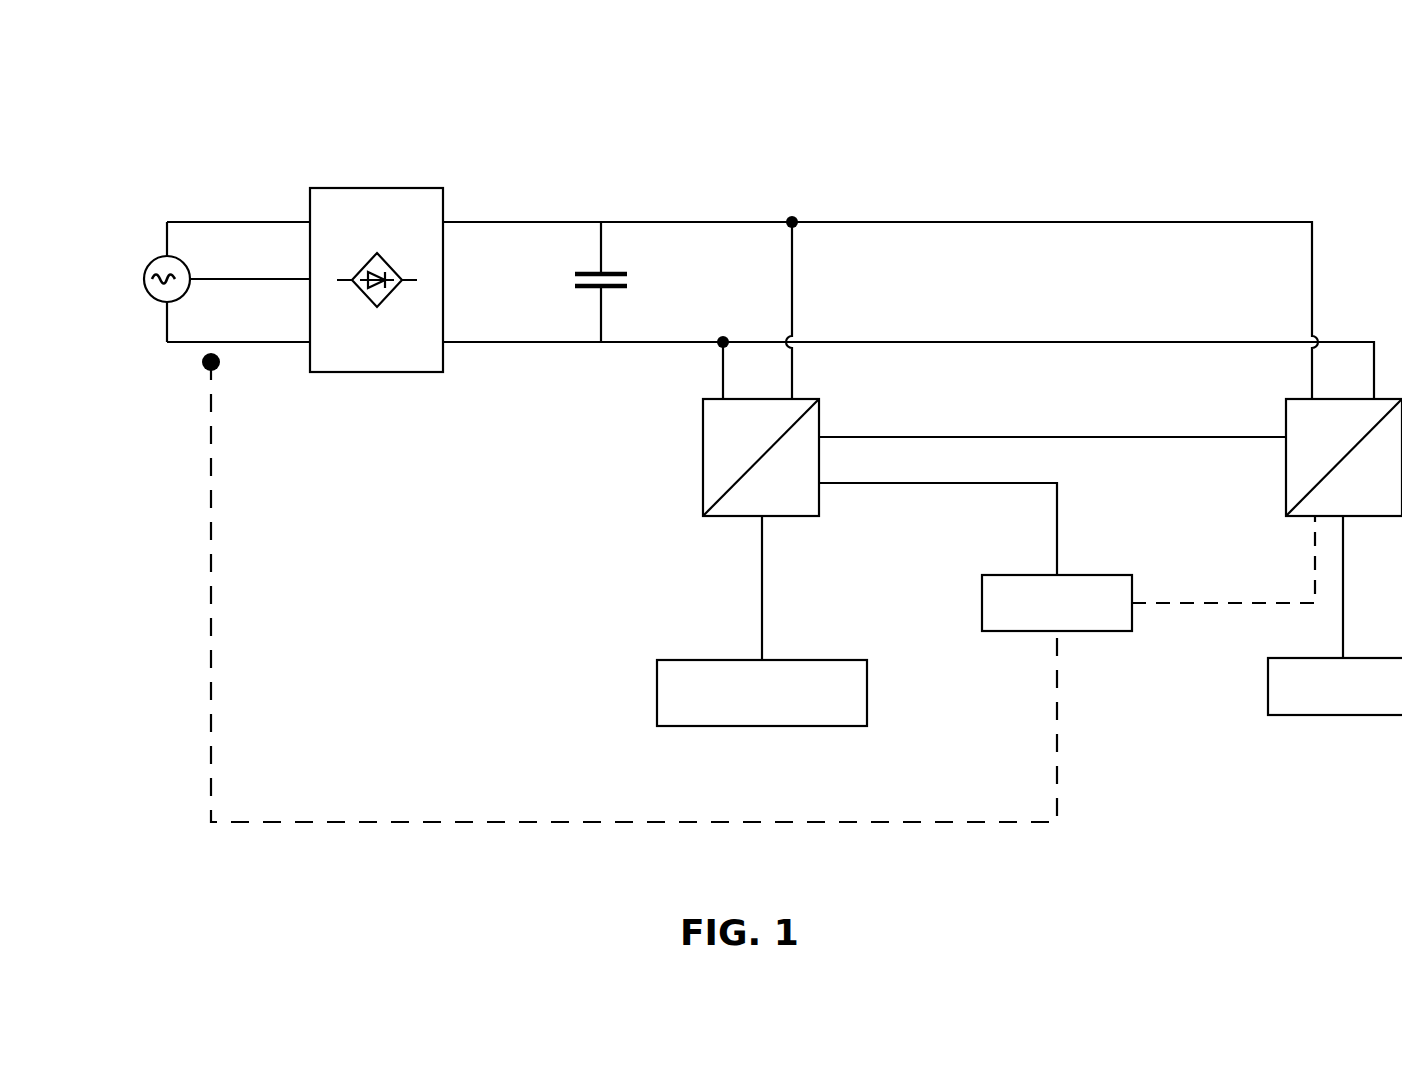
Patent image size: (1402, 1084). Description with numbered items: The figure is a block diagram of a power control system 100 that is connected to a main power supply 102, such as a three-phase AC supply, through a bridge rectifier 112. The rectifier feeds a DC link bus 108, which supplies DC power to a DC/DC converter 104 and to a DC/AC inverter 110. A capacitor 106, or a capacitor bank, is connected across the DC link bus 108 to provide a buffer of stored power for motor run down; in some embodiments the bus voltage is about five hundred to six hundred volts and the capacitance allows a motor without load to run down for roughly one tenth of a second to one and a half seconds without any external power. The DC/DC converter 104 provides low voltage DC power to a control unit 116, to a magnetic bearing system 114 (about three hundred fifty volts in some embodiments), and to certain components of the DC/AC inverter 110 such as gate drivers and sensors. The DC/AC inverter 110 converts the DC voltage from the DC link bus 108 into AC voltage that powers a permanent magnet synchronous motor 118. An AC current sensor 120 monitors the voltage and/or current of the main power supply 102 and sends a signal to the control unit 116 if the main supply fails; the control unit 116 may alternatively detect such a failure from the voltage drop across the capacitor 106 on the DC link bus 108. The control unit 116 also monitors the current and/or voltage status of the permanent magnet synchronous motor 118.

The power control system 100 is at (1158, 152).
The main power supply 102 is at (155, 305).
The DC/DC converter 104 is at (695, 488).
The capacitor 106 is at (600, 347).
The DC link bus 108 is at (951, 216).
The DC/AC inverter 110 is at (1283, 495).
The bridge rectifier 112 is at (368, 380).
The magnetic bearing system 114 is at (723, 730).
The control unit 116 is at (1073, 640).
The permanent magnet synchronous motor (PMSM) 118 is at (1340, 722).
The AC current sensor 120 is at (200, 370).